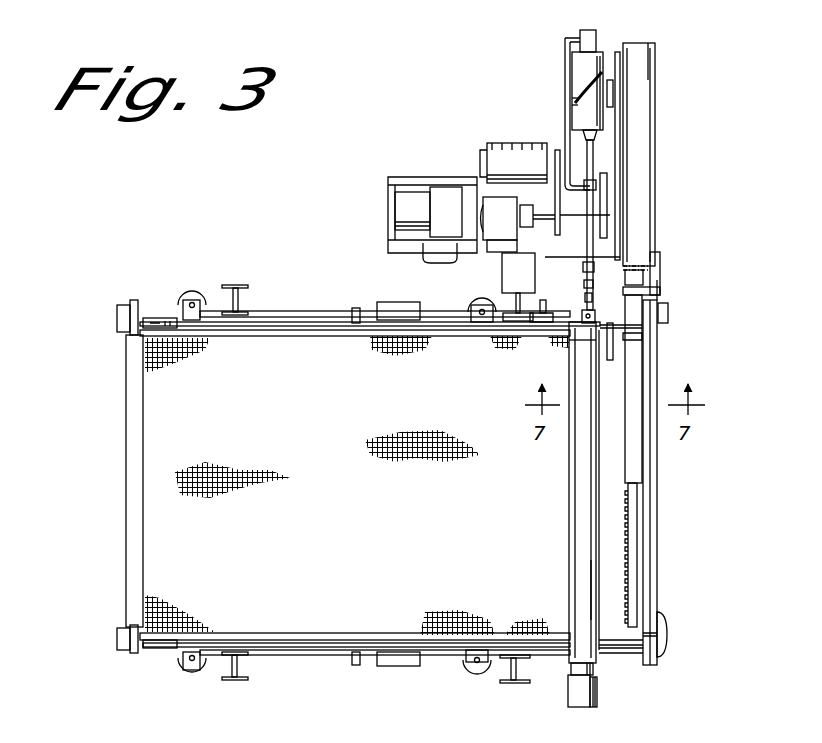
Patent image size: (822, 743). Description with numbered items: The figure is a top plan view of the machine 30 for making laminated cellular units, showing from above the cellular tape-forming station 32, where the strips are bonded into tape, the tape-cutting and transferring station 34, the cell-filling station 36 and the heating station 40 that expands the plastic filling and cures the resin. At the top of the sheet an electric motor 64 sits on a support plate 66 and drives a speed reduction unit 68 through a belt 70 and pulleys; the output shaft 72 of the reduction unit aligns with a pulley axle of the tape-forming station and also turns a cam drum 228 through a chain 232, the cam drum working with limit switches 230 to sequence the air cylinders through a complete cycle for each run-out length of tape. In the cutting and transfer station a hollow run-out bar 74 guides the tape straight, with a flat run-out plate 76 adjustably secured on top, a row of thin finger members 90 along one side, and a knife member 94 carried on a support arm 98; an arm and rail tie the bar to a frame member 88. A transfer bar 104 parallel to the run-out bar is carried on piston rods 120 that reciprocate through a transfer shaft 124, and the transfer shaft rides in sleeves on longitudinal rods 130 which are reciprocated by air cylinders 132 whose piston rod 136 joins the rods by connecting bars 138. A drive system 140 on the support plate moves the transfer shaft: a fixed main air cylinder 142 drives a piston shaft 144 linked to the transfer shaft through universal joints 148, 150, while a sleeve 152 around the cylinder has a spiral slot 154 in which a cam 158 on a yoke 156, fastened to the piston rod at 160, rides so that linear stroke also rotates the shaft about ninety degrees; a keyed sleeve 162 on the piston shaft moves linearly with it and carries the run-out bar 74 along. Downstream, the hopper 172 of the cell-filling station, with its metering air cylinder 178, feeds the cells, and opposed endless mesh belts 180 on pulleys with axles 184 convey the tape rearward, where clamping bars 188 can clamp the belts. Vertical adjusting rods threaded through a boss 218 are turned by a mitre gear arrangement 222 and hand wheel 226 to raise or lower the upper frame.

The machine 30 is at (145, 226).
The cellular tape-forming station 32 is at (664, 130).
The tape-cutting and transferring station 34 is at (682, 530).
The cell-filling station 36 is at (585, 590).
The heating station 40 is at (308, 333).
The electric motor 64 is at (445, 188).
The support plate 66 is at (400, 176).
The speed reduction unit 68 is at (495, 250).
The belt 70 is at (455, 262).
The output shaft 72 is at (518, 287).
The run-out bar 74 is at (657, 488).
The run-out plate 76 is at (645, 540).
The frame member 88 is at (245, 285).
The finger members 90 is at (605, 535).
The knife member 94 is at (650, 342).
The support arm 98 is at (668, 312).
The transfer bar 104 is at (596, 322).
The piston rods 120 is at (574, 342).
The transfer shaft 124 is at (575, 306).
The rods 130 is at (455, 310).
The air cylinders 132 is at (410, 302).
The piston rod 136 is at (305, 312).
The connecting bars 138 is at (357, 308).
The drive system 140 is at (599, 101).
The main air cylinder 142 is at (574, 100).
The piston shaft 144 is at (620, 152).
The universal joint 148 is at (660, 277).
The universal joint 150 is at (660, 293).
The sleeve 152 is at (648, 48).
The spiral slot 154 is at (605, 74).
The yoke 156 is at (565, 42).
The cam 158 is at (572, 105).
The connection 160 is at (597, 50).
The sleeve 162 is at (584, 268).
The hopper 172 is at (583, 525).
The air cylinder 178 is at (598, 712).
The endless mesh belts 180 is at (160, 580).
The axles 184 is at (117, 320).
The clamping bars 188 is at (125, 490).
The boss 218 is at (183, 300).
The mitre gear arrangement 222 is at (192, 290).
The hand wheel 226 is at (668, 645).
The cam drum 228 is at (483, 160).
The limit switches 230 is at (512, 140).
The chain 232 is at (552, 230).